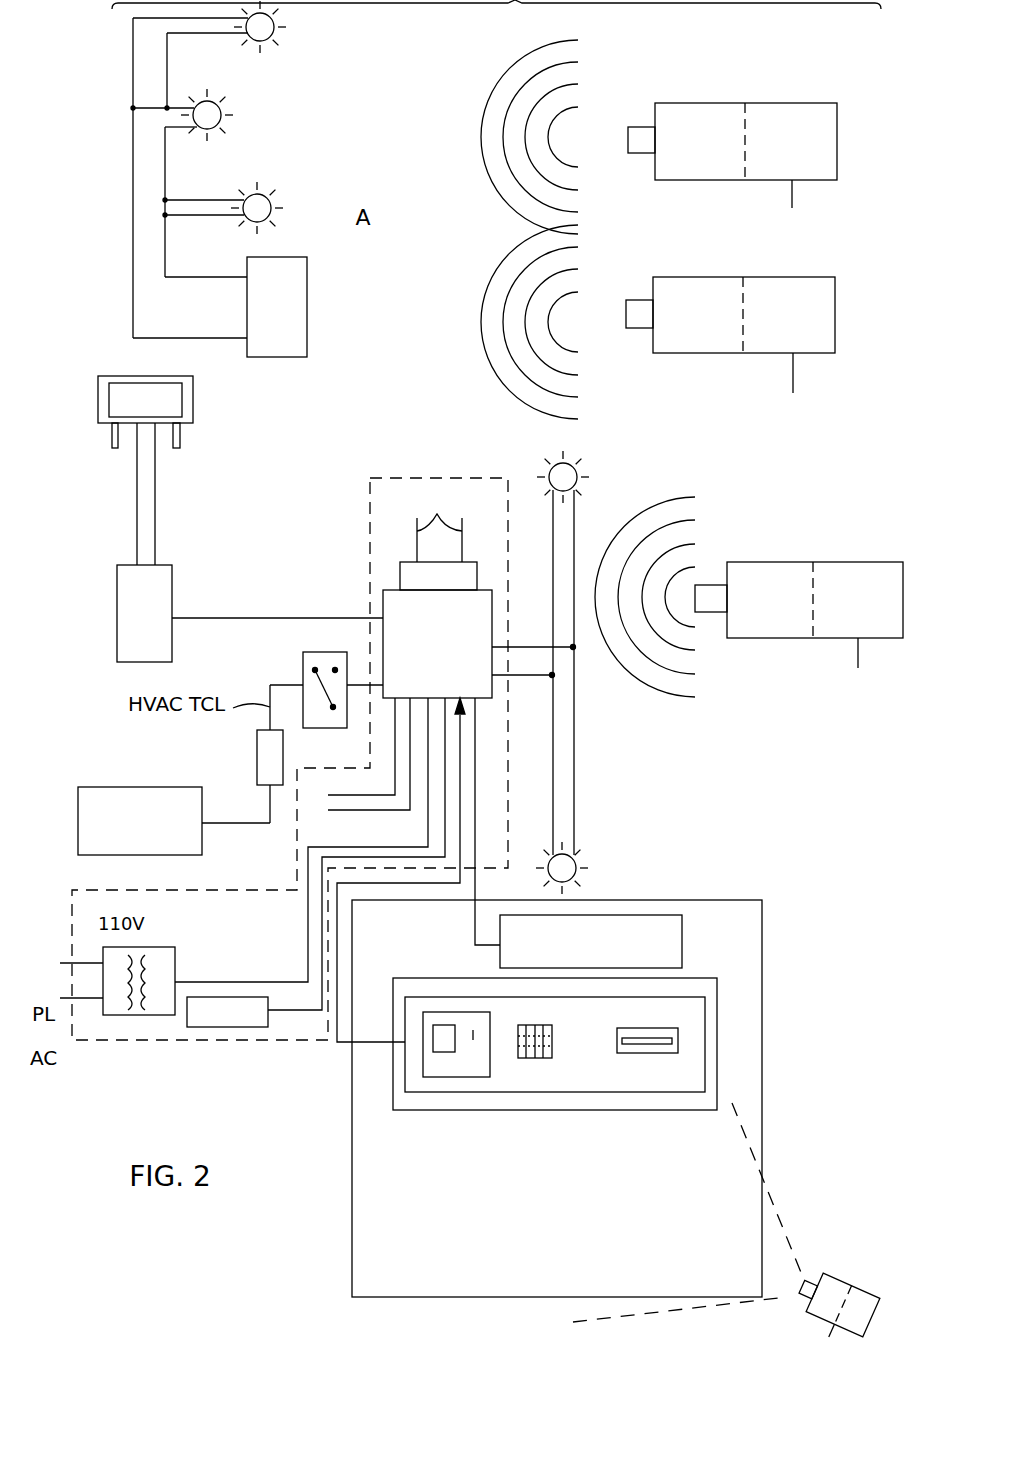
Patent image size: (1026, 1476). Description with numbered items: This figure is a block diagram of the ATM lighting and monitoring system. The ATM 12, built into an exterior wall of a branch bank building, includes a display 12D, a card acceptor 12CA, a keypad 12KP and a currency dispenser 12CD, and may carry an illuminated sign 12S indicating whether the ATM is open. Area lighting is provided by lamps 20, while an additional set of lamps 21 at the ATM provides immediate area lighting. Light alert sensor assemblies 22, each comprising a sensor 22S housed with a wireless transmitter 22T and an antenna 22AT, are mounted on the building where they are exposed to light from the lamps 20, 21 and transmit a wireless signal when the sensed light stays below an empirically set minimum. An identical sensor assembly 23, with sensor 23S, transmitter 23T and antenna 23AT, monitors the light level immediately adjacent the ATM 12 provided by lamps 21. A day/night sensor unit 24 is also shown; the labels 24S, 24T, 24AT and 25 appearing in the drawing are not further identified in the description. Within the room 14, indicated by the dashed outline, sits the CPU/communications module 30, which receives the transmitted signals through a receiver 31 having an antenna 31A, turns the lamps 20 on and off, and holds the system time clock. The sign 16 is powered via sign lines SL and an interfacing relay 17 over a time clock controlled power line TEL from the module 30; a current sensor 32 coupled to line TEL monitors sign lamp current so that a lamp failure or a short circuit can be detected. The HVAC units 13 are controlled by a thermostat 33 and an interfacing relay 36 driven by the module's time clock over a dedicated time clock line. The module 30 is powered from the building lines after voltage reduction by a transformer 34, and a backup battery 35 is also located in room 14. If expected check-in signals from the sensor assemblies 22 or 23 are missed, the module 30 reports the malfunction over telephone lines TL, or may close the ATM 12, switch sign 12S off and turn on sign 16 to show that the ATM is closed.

The ATM 12 is at (762, 1115).
The illuminated sign 12S is at (642, 915).
The keypad 12KP is at (555, 1068).
The display 12D is at (444, 1052).
The card acceptor 12CA is at (473, 1040).
The currency dispenser 12CD is at (653, 1036).
The HVAC unit 13 is at (108, 796).
The room 14 is at (463, 478).
The sign 16 is at (193, 400).
The interfacing relay 17 is at (136, 629).
The lamps 20 is at (262, 195).
The lamps 21 is at (580, 476).
The light alert sensor assembly 22 is at (678, 103).
The sensor 22S is at (634, 127).
The wireless transmitter 22T is at (797, 103).
The antenna 22AT is at (790, 190).
The sensor assembly 23 is at (805, 1307).
The sensor 23S is at (808, 1280).
The transmitter 23T is at (861, 1292).
The antenna 23AT is at (843, 1346).
The day/night sensor unit 24 is at (766, 640).
The sensor element 24S is at (712, 585).
The sensor transmitter 24T is at (860, 562).
The sensor antenna 24AT is at (858, 665).
The light wiring 25 is at (150, 250).
The CPU/communications module 30 is at (492, 632).
The receiver 31 is at (480, 573).
The antenna 31A is at (440, 525).
The current sensor 32 is at (226, 608).
The thermostat 33 is at (272, 753).
The transformer 34 is at (155, 948).
The backup battery 35 is at (227, 1012).
The interfacing relay 36 is at (320, 652).
The sign lines SL is at (150, 510).
The telephone lines TL is at (362, 812).
The time clock controlled power line TEL is at (184, 626).